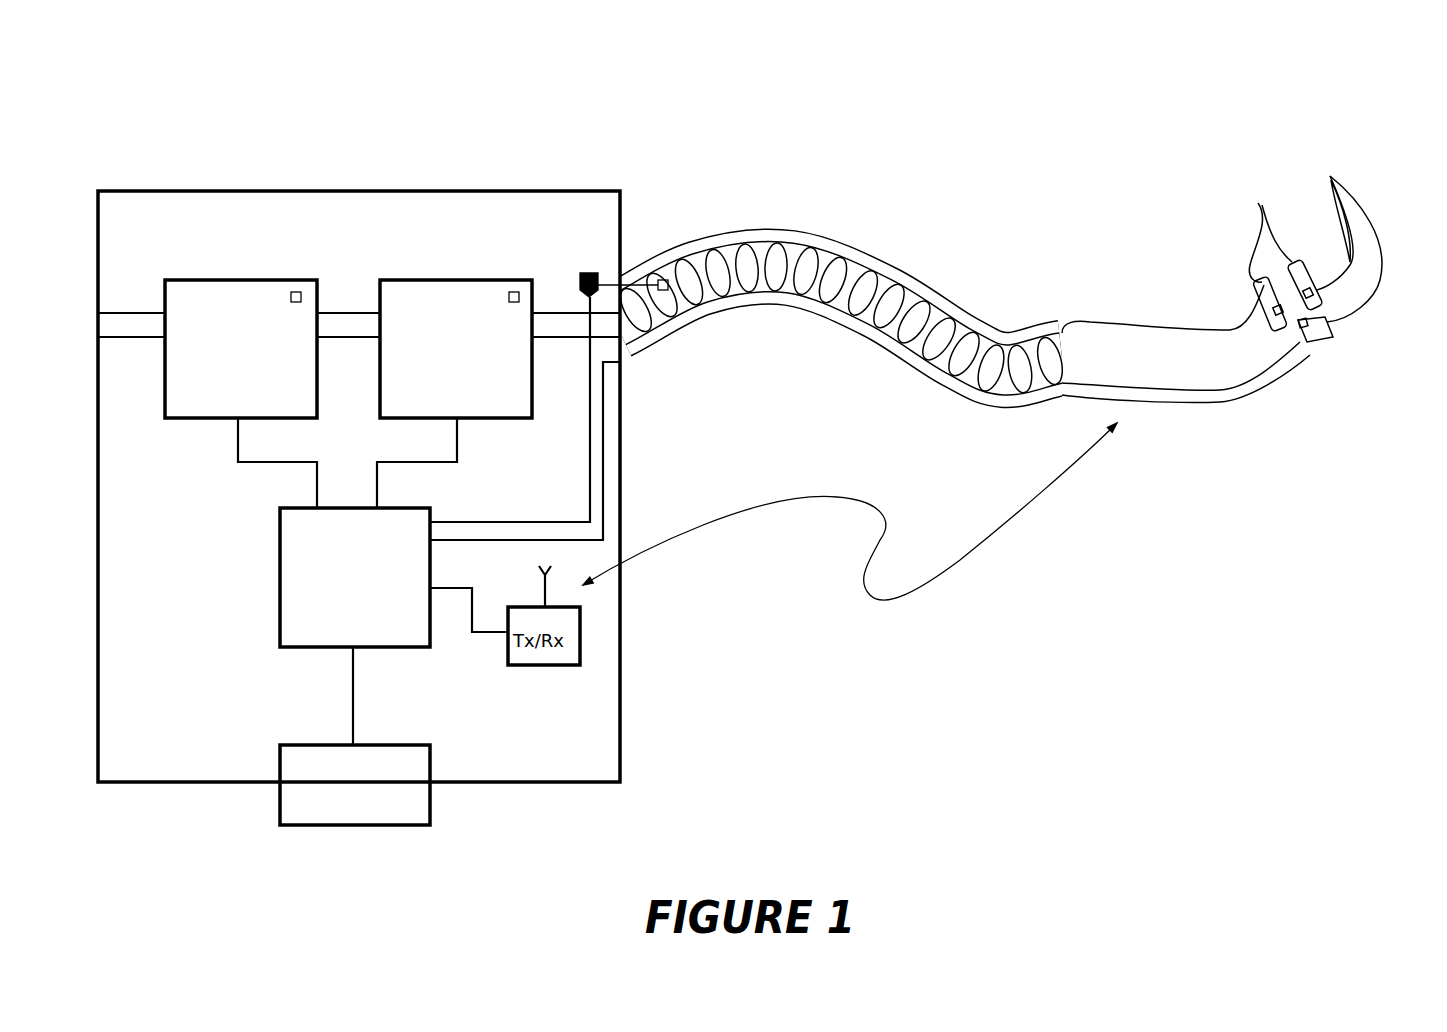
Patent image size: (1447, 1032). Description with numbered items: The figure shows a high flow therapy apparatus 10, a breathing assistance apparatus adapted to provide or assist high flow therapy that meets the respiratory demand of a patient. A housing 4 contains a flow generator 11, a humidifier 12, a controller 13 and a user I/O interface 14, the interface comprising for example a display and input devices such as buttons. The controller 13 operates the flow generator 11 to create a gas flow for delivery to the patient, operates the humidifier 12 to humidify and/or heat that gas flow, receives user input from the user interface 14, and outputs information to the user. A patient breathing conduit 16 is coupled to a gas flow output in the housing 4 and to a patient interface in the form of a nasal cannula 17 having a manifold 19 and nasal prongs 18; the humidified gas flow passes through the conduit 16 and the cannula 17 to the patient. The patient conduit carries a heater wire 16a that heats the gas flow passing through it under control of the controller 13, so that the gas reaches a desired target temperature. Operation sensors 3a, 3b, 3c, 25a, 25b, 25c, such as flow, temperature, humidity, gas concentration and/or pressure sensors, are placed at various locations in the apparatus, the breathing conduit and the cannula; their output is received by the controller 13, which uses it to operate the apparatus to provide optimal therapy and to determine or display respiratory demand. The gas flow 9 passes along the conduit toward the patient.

The housing 4 is at (178, 190).
The flow therapy apparatus 10 is at (460, 148).
The flow generator 11 is at (210, 280).
The humidifier 12 is at (452, 280).
The controller 13 is at (280, 615).
The user I/O interface 14 is at (290, 808).
The operation sensor 3a is at (301, 294).
The operation sensor 3b is at (519, 293).
The operation sensor 3c is at (668, 285).
The gases flow 9 is at (729, 395).
The patient breathing conduit 16 is at (960, 378).
The heater wire 16a is at (868, 310).
The nasal cannula 17 is at (1375, 307).
The nasal prongs 18 is at (1258, 205).
The manifold 19 is at (1212, 375).
The operation sensor 25a is at (1320, 278).
The operation sensor 25b is at (1262, 283).
The operation sensor 25c is at (1315, 340).